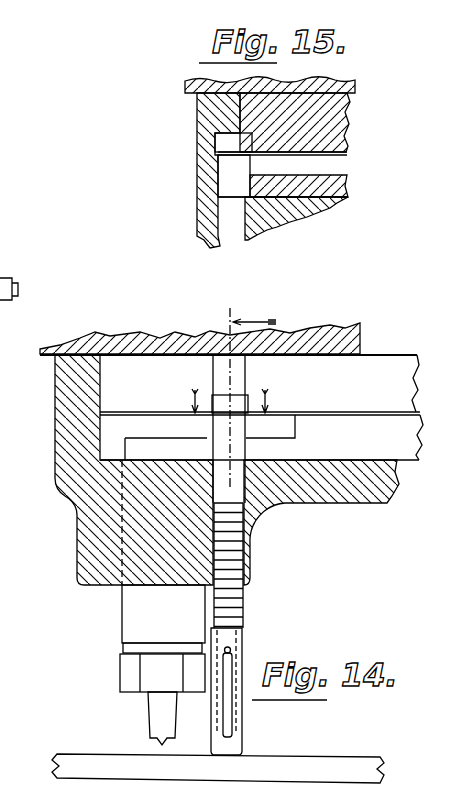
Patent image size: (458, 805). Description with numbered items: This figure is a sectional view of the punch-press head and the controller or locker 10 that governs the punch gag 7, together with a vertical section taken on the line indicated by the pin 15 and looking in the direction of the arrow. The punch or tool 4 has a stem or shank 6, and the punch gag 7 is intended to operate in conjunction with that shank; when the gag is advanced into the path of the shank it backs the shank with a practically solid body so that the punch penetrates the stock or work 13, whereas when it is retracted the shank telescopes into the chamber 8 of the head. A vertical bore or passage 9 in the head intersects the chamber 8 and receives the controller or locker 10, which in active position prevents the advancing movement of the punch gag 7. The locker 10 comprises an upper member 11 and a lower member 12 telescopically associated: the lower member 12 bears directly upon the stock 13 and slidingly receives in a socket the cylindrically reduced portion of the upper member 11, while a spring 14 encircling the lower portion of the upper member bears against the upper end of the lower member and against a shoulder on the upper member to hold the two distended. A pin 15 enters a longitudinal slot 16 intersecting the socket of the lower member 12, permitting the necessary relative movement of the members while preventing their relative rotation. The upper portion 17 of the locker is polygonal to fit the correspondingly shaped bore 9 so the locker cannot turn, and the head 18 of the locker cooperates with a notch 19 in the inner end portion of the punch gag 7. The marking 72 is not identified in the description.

In FIG. 14, the punch or tool 4 is at (157, 718).
In FIG. 14, the stem or shank 6 is at (125, 614).
In FIG. 15, the punch gag 7 is at (335, 128).
In FIG. 14, the punch gag 7 is at (385, 362).
In FIG. 14, the chamber 8 is at (108, 440).
In FIG. 15, the vertical bore or passage 9 is at (211, 243).
In FIG. 14, the vertical bore or passage 9 is at (251, 542).
In FIG. 14, the controller or locker 10 is at (244, 597).
In FIG. 14, the upper member 11 is at (251, 562).
In FIG. 14, the lower member 12 is at (243, 660).
In FIG. 14, the stock or work 13 is at (333, 758).
In FIG. 14, the spring 14 is at (245, 614).
In FIG. 14, the pin 15 is at (247, 394).
In FIG. 14, the longitudinal slot 16 is at (229, 410).
In FIG. 15, the upper portion of the locker 17 is at (243, 217).
In FIG. 14, the upper portion of the locker 17 is at (287, 505).
In FIG. 15, the head of the locker 18 is at (228, 178).
In FIG. 14, the head of the locker 18 is at (238, 447).
In FIG. 15, the notch 19 is at (238, 143).
In FIG. 14, the notch 19 is at (246, 396).
In FIG. 14, the clip 72 is at (8, 278).